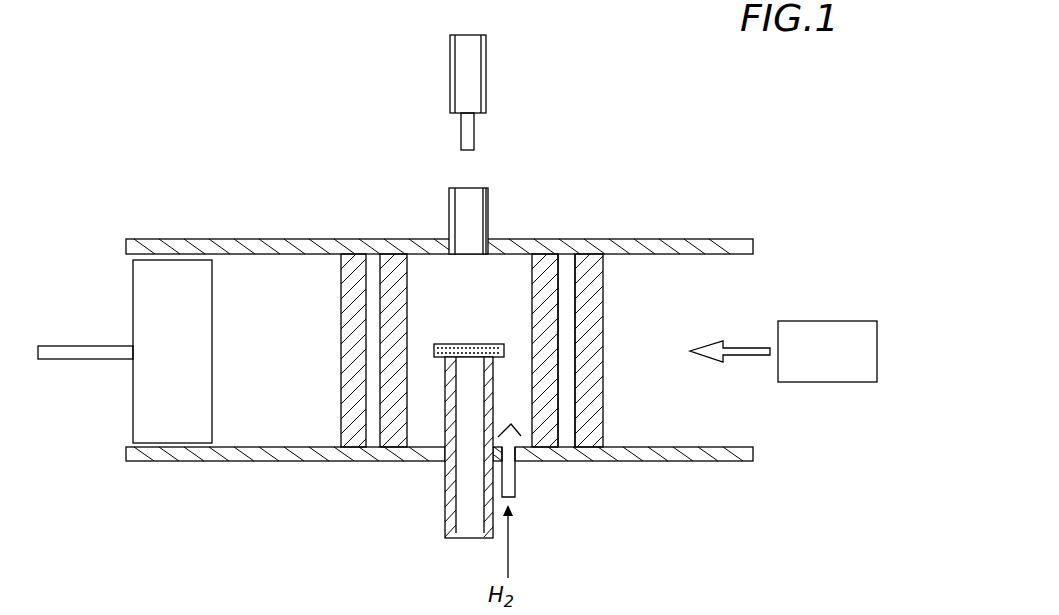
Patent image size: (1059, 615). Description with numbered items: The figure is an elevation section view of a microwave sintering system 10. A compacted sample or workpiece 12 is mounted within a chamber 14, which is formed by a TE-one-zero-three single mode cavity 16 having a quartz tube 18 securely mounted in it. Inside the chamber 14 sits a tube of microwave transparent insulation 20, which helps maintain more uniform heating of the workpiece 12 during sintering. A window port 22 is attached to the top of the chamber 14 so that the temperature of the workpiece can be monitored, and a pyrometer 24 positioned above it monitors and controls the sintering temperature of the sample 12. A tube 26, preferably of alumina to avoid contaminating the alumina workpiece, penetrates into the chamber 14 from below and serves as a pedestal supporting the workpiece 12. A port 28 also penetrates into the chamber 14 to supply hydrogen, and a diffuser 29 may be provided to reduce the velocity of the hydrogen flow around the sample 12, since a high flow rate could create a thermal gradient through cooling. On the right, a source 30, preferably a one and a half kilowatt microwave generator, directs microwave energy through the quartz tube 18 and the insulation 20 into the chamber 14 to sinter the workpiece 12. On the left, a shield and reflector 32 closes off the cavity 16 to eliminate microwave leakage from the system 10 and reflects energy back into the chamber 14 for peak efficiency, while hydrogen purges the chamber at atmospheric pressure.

The microwave sintering system 10 is at (83, 452).
The sample or workpiece 12 is at (470, 337).
The chamber 14 is at (432, 283).
The single mode cavity 16 is at (323, 462).
The quartz tube 18 is at (603, 312).
The tube of microwave transparent insulation 20 is at (560, 421).
The window port 22 is at (488, 208).
The pyrometer 24 is at (487, 72).
The tube 26 is at (447, 518).
The port 28 is at (516, 477).
The diffuser 29 is at (519, 424).
The source 30 is at (827, 321).
The shield and reflector 32 is at (145, 310).